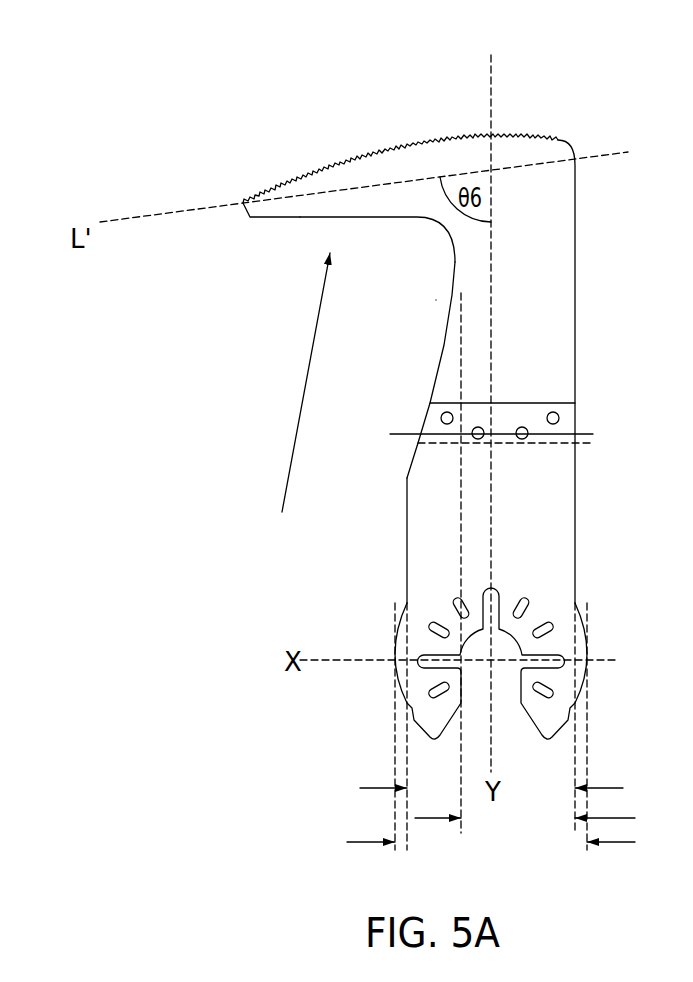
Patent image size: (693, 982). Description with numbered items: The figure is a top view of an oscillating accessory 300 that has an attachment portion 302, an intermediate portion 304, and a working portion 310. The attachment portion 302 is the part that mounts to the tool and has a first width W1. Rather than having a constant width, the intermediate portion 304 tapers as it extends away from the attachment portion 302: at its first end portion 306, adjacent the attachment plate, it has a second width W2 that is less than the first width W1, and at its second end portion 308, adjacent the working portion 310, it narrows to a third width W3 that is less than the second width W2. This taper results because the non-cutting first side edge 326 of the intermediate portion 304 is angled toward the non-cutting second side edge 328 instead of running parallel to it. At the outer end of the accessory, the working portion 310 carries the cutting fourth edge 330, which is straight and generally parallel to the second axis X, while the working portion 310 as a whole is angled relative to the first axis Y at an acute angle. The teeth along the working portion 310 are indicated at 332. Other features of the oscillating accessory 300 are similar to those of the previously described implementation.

The oscillating accessory 300 is at (444, 384).
The attachment portion 302 is at (375, 687).
The intermediate portion 304 is at (433, 340).
The first end portion 306 is at (407, 478).
The second end portion 308 is at (557, 210).
The working portion 310 is at (345, 135).
The non-cutting first side edge 326 is at (452, 298).
The non-cutting second side edge 328 is at (576, 312).
The cutting fourth edge 330 is at (312, 218).
The cutting teeth 332 is at (297, 178).
The first width W1 is at (363, 847).
The second width W2 is at (372, 782).
The third width W3 is at (443, 818).